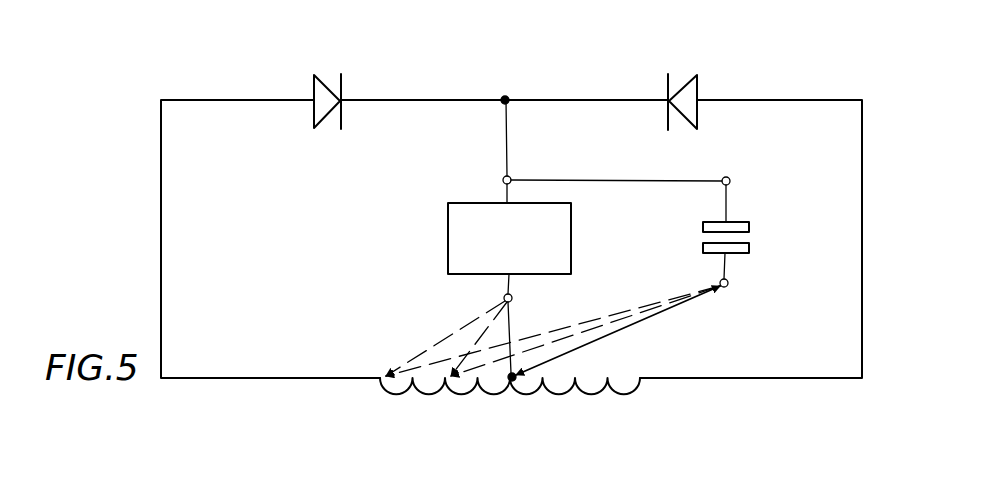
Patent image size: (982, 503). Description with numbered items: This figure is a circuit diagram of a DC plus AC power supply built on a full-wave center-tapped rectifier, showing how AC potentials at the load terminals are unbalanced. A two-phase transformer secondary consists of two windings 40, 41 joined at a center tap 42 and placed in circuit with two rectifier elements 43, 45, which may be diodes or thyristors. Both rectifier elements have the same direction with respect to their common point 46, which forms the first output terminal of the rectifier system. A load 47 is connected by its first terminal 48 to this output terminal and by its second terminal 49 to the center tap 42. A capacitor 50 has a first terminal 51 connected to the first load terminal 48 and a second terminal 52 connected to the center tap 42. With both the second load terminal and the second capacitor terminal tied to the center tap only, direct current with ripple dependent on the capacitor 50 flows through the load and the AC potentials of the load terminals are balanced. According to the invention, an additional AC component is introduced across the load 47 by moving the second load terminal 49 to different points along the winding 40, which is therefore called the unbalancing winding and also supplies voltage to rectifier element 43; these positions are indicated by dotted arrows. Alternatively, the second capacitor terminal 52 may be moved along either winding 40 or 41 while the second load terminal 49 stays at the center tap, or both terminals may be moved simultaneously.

The transformer winding 40 is at (463, 395).
The transformer winding 41 is at (593, 396).
The center tap 42 is at (512, 381).
The rectifier element 43 is at (326, 83).
The rectifier element 45 is at (682, 86).
The common point 46 is at (507, 95).
The load 47 is at (447, 241).
The first load terminal 48 is at (503, 178).
The second load terminal 49 is at (504, 298).
The capacitor 50 is at (745, 221).
The first capacitor terminal 51 is at (722, 185).
The second capacitor terminal 52 is at (728, 287).